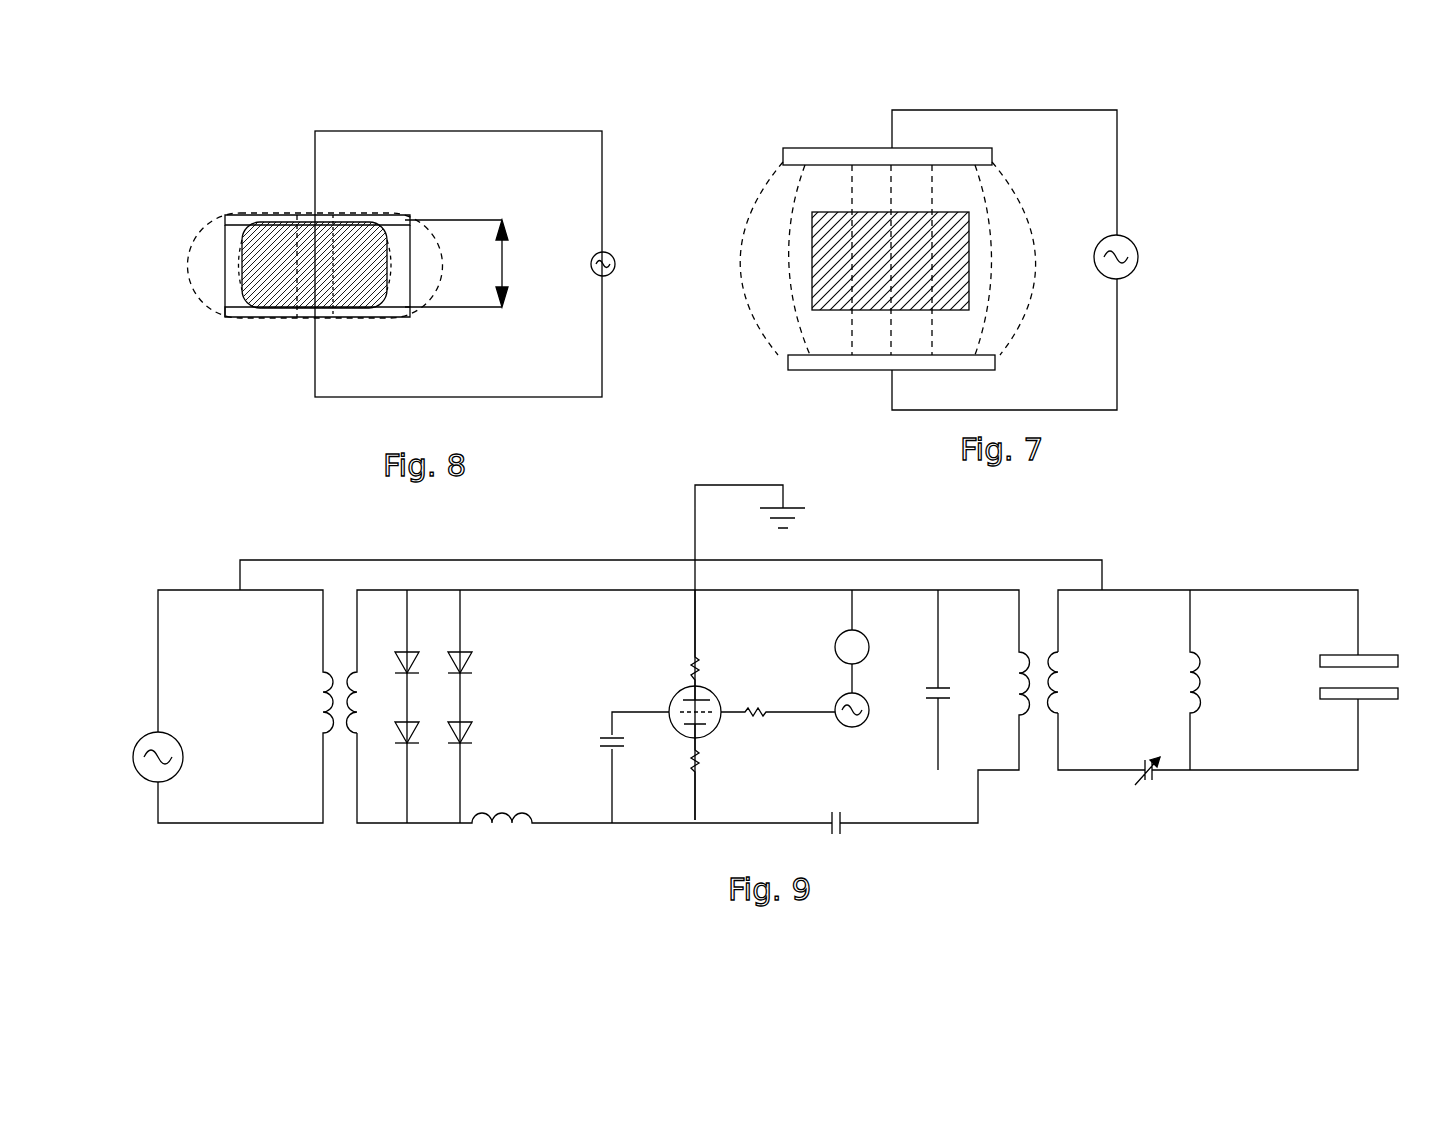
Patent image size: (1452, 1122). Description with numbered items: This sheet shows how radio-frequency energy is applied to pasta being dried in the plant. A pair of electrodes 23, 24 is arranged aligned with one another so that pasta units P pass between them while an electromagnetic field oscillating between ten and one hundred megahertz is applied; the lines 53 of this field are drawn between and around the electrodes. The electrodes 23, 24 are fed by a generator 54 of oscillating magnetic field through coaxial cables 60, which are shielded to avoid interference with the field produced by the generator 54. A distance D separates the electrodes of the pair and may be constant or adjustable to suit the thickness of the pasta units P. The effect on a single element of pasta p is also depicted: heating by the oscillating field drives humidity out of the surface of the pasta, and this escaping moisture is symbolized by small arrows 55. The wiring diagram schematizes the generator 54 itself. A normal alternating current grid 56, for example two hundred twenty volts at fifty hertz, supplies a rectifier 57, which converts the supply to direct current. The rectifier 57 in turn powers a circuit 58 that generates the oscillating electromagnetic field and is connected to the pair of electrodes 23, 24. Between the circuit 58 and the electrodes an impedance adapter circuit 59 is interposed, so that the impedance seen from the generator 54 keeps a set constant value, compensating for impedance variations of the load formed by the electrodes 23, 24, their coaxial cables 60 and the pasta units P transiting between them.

In FIG. 8, the electrode 23 is at (290, 216).
In FIG. 7, the electrode 23 is at (872, 150).
In FIG. 9, the electrode 23 is at (1372, 658).
In FIG. 8, the electrode 24 is at (283, 316).
In FIG. 7, the electrode 24 is at (855, 362).
In FIG. 9, the electrode 24 is at (1375, 695).
In FIG. 8, the lines of the electromagnetic field 53 is at (387, 275).
In FIG. 7, the lines of the electromagnetic field 53 is at (785, 247).
In FIG. 8, the generator of oscillating magnetic field 54 is at (610, 262).
In FIG. 7, the generator of oscillating magnetic field 54 is at (1132, 256).
In FIG. 9, the generator of oscillating magnetic field 54 is at (515, 862).
In FIG. 8, the small arrows 55 is at (205, 268).
In FIG. 9, the alternating current grid 56 is at (138, 745).
In FIG. 9, the rectifier 57 is at (498, 688).
In FIG. 9, the circuit generating an oscillating electromagnetic field 58 is at (750, 760).
In FIG. 9, the impedance adapter circuit 59 is at (1036, 808).
In FIG. 8, the coaxial cables 60 is at (510, 131).
In FIG. 7, the coaxial cables 60 is at (1100, 110).
In FIG. 9, the coaxial cables 60 is at (1268, 590).
In FIG. 7, the pasta units P is at (906, 265).
In FIG. 8, the pasta p is at (355, 250).
In FIG. 8, the distance between the electrodes D is at (469, 263).